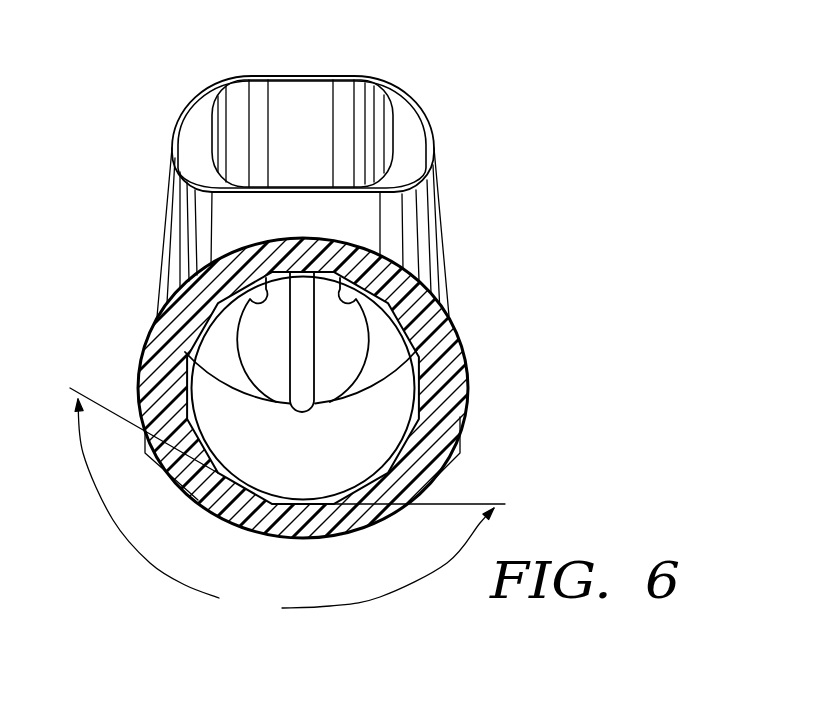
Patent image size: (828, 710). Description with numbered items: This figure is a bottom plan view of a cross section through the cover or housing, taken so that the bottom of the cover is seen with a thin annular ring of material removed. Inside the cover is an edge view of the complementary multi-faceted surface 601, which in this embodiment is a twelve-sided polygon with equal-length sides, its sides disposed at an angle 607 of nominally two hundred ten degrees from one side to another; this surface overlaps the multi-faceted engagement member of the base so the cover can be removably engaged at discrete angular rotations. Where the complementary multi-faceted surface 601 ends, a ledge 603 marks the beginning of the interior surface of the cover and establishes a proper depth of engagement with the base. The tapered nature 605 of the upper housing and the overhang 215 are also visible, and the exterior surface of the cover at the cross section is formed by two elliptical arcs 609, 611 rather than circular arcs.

The overhanging portion 215 is at (198, 78).
The tapered nature of the upper housing 605 is at (160, 210).
The complementary multi-faceted surface 601 is at (205, 322).
The ledge 603 is at (415, 406).
The elliptical arc 609 is at (420, 282).
The elliptical arc 611 is at (335, 535).
The angle 607 is at (221, 599).